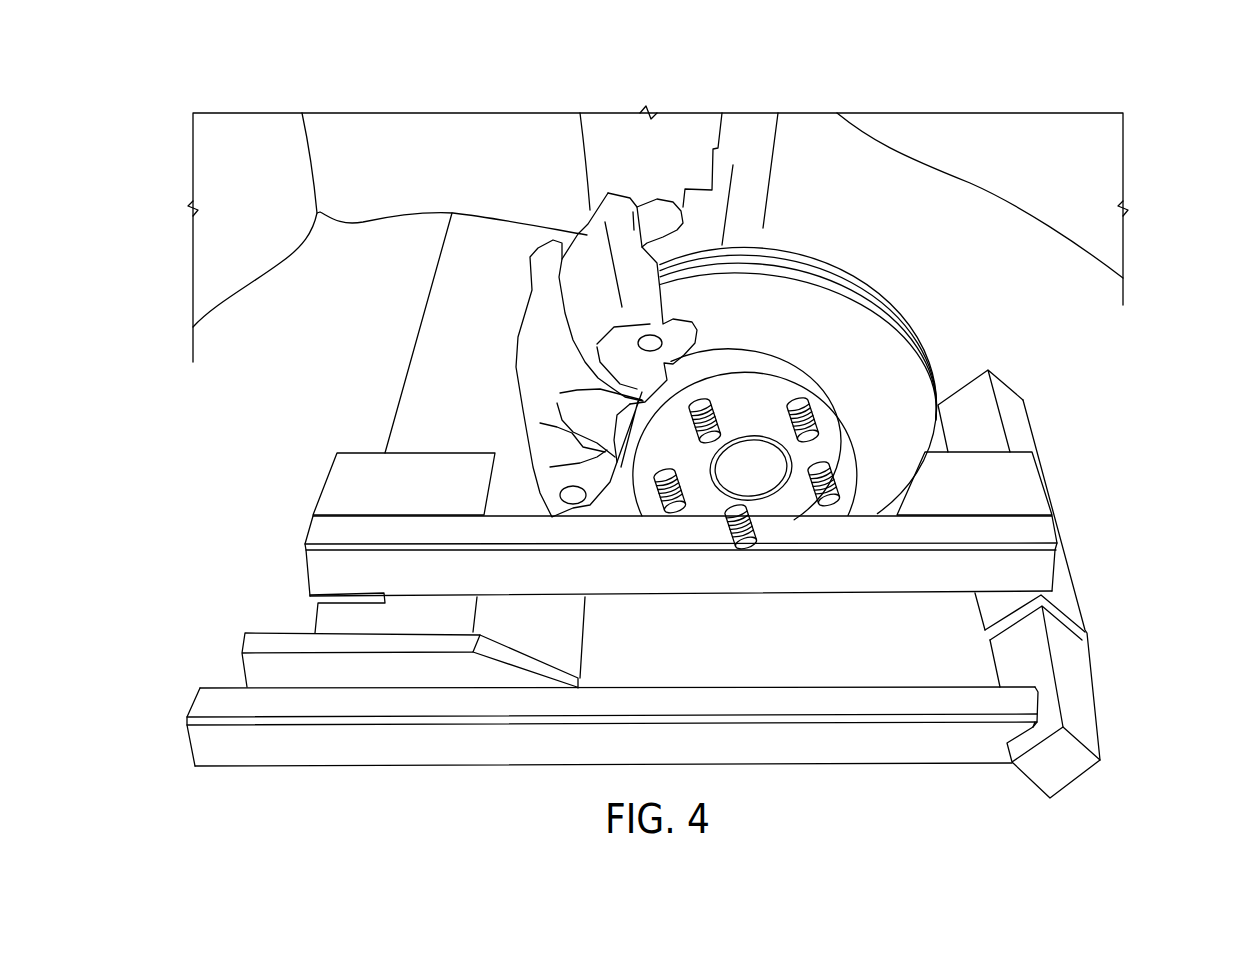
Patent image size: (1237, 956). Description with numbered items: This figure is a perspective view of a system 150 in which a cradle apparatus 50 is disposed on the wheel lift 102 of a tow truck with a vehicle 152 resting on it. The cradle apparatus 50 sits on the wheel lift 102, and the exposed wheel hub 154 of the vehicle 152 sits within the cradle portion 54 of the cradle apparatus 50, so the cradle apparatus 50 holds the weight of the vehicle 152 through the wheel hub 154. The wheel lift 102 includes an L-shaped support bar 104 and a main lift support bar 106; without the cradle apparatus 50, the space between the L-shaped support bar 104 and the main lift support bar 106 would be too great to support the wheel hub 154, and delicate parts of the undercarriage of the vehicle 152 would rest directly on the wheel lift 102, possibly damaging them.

The cradle apparatus 50 is at (1023, 482).
The cradle portion 54 is at (513, 492).
The wheel lift 102 is at (798, 768).
The L-shaped support bar 104 is at (1077, 712).
The main lift support bar 106 is at (431, 339).
The system 150 is at (1118, 377).
The vehicle 152 is at (447, 130).
The wheel hub 154 is at (921, 397).